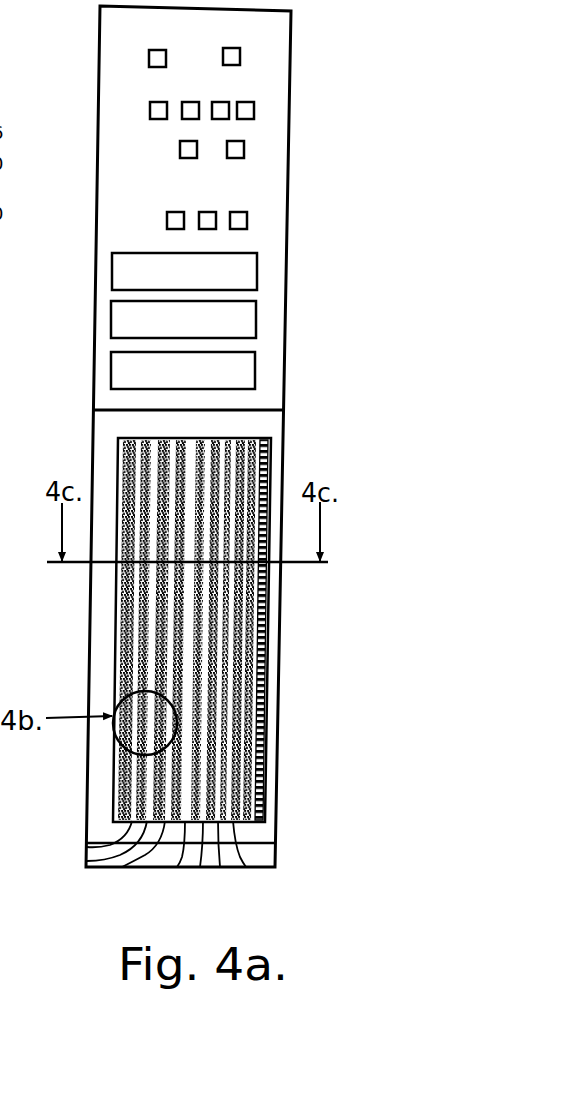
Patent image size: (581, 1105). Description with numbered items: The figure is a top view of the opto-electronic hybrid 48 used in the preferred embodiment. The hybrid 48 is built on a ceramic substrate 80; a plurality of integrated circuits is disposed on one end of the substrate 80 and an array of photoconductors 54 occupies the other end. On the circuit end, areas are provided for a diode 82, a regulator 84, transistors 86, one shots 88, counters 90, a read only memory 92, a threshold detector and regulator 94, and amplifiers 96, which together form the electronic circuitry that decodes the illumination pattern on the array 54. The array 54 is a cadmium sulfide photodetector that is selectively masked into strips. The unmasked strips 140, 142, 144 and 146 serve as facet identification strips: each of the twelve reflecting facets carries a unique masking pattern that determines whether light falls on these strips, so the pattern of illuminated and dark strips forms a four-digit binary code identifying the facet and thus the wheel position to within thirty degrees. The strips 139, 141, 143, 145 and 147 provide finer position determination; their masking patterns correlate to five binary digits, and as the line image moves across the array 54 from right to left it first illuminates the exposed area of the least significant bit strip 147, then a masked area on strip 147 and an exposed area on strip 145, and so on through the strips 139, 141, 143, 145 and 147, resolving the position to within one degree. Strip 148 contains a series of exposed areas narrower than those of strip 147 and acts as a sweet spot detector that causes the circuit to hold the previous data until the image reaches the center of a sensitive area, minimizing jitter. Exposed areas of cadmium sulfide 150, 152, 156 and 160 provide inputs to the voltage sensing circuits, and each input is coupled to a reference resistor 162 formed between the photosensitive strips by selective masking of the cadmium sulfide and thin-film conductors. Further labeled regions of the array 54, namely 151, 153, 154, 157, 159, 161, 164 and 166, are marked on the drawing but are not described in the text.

The hybrid 48 is at (295, 279).
The photodetector array 54 is at (262, 405).
The ceramic substrate 80 is at (104, 25).
The diode 82 is at (240, 56).
The regulator 84 is at (149, 58).
The transistors 86 is at (254, 112).
The one shots 88 is at (244, 149).
The counters 90 is at (167, 220).
The read only memory 92 is at (114, 264).
The threshold detector and regulator 94 is at (113, 314).
The amplifiers 96 is at (113, 365).
The position determination strip 139 is at (110, 820).
The facet identification strip 140 is at (87, 847).
The position determination strip 141 is at (87, 861).
The facet identification strip 142 is at (122, 867).
The position determination strip 143 is at (177, 867).
The facet identification strip 144 is at (200, 867).
The position determination strip 145 is at (220, 867).
The facet identification strip 146 is at (246, 867).
The least significant bit strip 147 is at (243, 823).
The sweet spot detector strip 148 is at (266, 822).
The exposed area of cadmium sulfide 150 is at (247, 803).
The contact array 151 is at (234, 630).
The exposed area of cadmium sulfide 152 is at (217, 786).
The contact pad 153 is at (263, 748).
The contact column 154 is at (150, 647).
The exposed area of cadmium sulfide 156 is at (188, 743).
The contact pad 157 is at (190, 695).
The contact column 159 is at (150, 605).
The exposed area of cadmium sulfide 160 is at (120, 575).
The contact column 161 is at (113, 794).
The reference resistors 162 is at (215, 438).
The board edge 164 is at (276, 738).
The contact column 166 is at (272, 598).